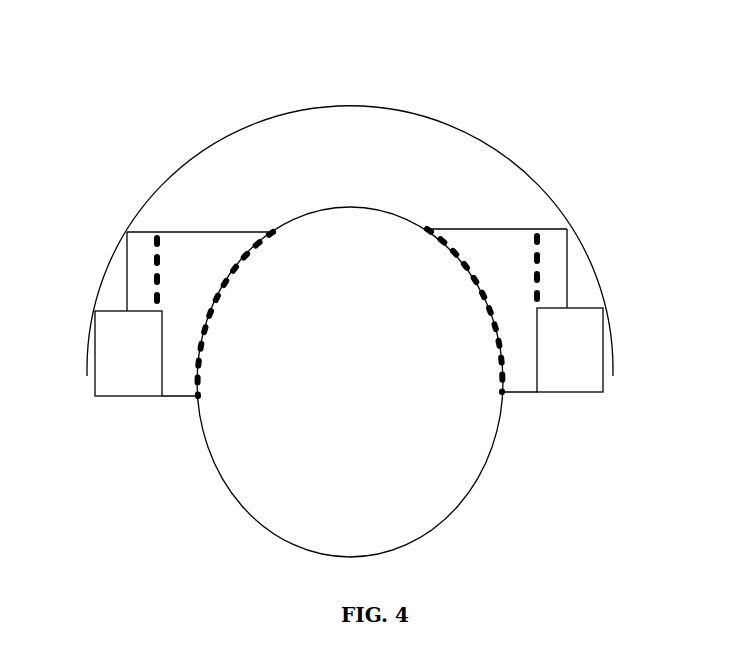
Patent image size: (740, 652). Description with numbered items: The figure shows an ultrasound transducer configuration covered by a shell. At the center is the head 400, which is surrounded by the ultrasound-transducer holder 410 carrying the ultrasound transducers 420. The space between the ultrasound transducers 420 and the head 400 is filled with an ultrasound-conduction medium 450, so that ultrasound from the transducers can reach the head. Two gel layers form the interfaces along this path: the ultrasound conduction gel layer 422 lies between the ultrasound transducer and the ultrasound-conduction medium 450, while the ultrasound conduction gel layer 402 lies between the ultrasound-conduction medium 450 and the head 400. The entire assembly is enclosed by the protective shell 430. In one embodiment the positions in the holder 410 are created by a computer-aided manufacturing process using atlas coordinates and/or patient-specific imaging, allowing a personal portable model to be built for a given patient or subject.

The head 400 is at (272, 442).
The ultrasound conduction gel layer 402 is at (195, 382).
The ultrasound-transducer holder 410 is at (573, 353).
The ultrasound transducers 420 is at (563, 252).
The ultrasound conduction gel layer 422 is at (158, 268).
The protective shell 430 is at (330, 107).
The ultrasound-conduction medium 450 is at (200, 275).